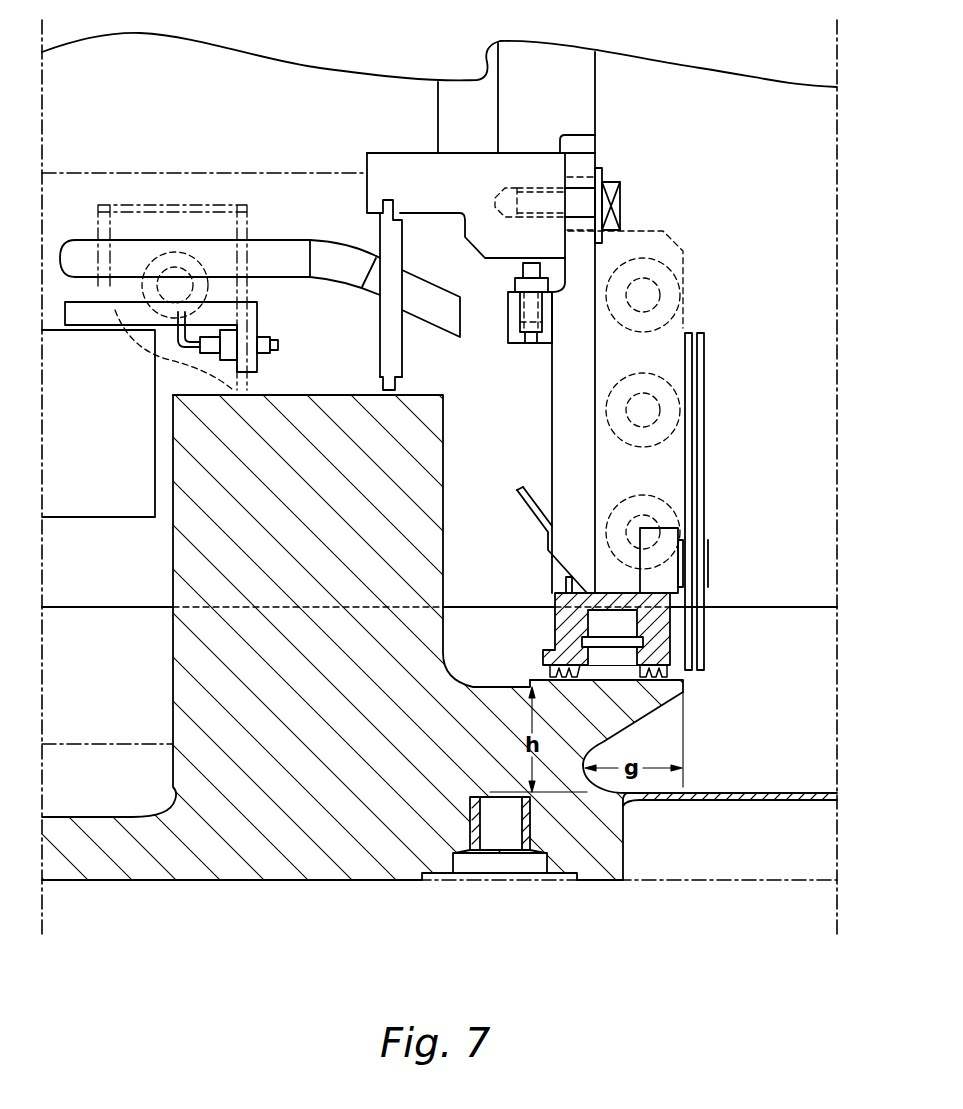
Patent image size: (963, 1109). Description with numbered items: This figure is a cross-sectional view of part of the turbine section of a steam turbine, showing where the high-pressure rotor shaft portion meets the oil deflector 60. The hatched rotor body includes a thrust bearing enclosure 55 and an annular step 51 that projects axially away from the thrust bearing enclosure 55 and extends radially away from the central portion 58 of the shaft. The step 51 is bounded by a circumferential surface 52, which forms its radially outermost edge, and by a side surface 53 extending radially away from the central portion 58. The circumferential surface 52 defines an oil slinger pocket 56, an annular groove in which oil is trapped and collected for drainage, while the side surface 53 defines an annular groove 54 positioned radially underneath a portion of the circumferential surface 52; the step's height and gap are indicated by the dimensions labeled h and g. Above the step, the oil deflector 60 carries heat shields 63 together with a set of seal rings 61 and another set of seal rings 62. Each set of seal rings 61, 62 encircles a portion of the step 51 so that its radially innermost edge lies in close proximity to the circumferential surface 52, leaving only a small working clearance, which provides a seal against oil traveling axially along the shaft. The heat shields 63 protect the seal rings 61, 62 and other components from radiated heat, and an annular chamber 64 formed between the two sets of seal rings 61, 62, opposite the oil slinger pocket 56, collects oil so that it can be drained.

The annular step 51 is at (620, 698).
The circumferential surface 52 is at (693, 673).
The side surface 53 is at (600, 748).
The annular groove 54 is at (605, 760).
The thrust bearing enclosure 55 is at (417, 483).
The oil slinger pocket 56 is at (603, 678).
The central portion 58 is at (313, 832).
The oil deflector 60 is at (632, 250).
The seal rings 61 is at (657, 660).
The seal rings 62 is at (550, 675).
The heat shields 63 is at (703, 391).
The annular chamber 64 is at (600, 657).